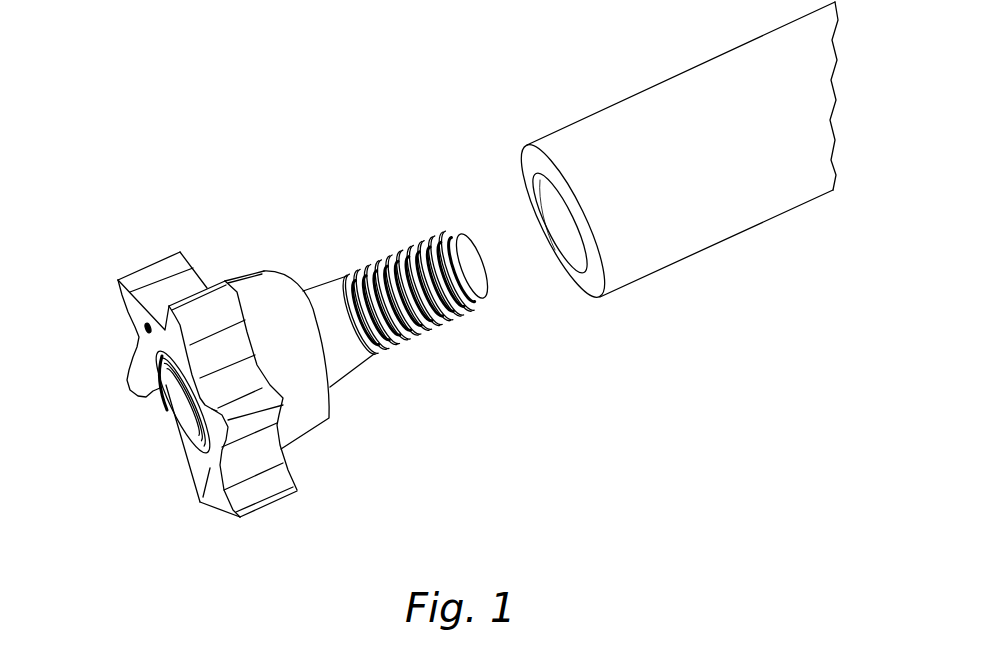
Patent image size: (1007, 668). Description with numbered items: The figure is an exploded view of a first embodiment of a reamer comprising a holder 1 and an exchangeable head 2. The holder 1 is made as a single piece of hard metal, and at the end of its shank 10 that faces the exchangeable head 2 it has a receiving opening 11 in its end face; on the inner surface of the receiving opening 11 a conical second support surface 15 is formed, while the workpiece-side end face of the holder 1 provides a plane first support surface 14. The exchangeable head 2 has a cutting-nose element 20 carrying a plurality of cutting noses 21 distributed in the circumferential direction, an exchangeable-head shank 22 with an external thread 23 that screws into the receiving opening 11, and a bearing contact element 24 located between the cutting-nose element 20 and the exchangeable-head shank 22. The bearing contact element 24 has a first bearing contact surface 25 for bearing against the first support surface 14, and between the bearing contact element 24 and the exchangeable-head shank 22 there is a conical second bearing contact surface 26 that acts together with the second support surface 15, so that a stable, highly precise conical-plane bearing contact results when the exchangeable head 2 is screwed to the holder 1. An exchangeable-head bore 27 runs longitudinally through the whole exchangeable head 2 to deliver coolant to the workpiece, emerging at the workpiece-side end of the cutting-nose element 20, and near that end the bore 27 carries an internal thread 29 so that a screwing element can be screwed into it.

The holder 1 is at (556, 70).
The exchangeable head 2 is at (278, 200).
The shank 10 is at (678, 250).
The receiving opening 11 is at (575, 248).
The first support surface 14 is at (532, 165).
The second support surface 15 is at (547, 182).
The cutting-nose element 20 is at (187, 453).
The cutting noses 21 is at (257, 490).
The exchangeable-head shank 22 is at (377, 252).
The external thread 23 is at (445, 322).
The bearing contact element 24 is at (312, 410).
The first bearing contact surface 25 is at (283, 280).
The second bearing contact surface 26 is at (347, 358).
The exchangeable-head bore 27 is at (190, 387).
The internal thread 29 is at (172, 386).